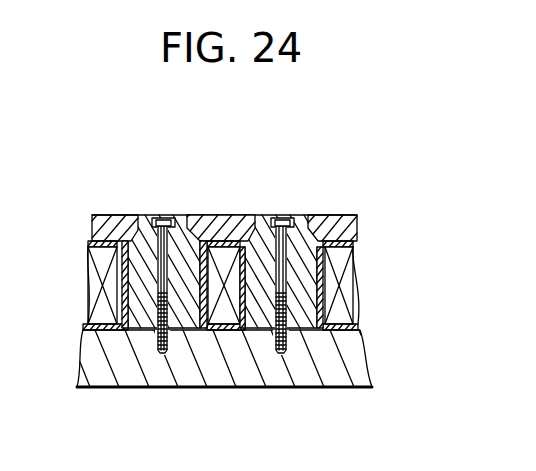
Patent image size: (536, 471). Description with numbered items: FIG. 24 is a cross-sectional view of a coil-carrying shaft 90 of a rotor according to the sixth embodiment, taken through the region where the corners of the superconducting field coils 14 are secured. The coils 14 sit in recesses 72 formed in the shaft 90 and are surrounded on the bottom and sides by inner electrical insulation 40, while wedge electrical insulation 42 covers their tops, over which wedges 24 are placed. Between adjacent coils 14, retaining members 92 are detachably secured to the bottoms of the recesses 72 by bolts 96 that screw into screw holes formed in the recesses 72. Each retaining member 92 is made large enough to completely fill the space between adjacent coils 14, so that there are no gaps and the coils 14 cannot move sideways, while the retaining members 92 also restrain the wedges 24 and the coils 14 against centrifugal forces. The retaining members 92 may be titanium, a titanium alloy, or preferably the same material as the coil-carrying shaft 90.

The superconducting field coil 14 is at (223, 333).
The wedge 24 is at (223, 216).
The inner electrical insulation 40 is at (191, 298).
The wedge electrical insulation 42 is at (356, 243).
The recess 72 is at (141, 315).
The coil-carrying shaft 90 is at (368, 362).
The retaining member 92 is at (263, 216).
The bolt 96 is at (163, 218).